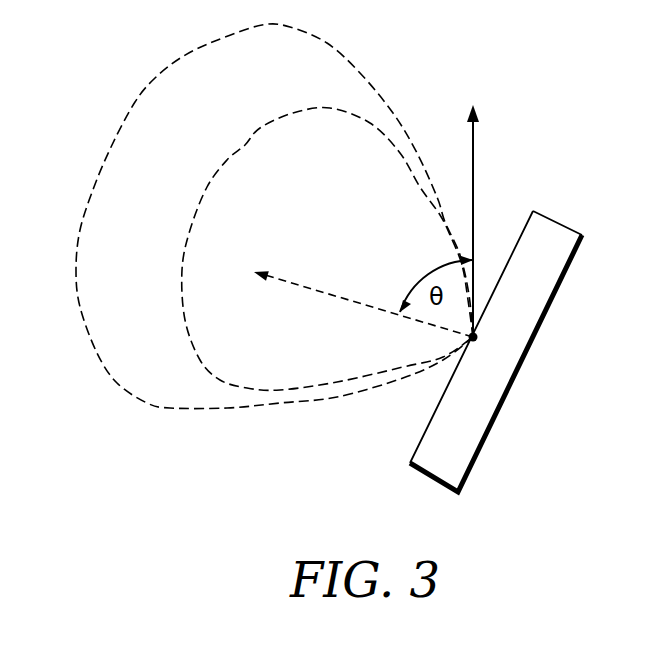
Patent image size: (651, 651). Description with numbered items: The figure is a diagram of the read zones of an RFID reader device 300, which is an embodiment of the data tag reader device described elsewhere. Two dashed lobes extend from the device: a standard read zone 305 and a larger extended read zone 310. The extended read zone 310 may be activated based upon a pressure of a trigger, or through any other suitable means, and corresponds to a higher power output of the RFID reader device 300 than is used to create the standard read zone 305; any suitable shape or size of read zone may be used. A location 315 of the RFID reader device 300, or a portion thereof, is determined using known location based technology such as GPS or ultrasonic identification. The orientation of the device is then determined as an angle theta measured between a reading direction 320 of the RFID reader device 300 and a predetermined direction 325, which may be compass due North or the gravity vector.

The RFID reader device 300 is at (567, 228).
The standard read zone 305 is at (246, 145).
The extended read zone 310 is at (142, 91).
The location 315 is at (468, 337).
The reading direction 320 is at (313, 290).
The predetermined direction 325 is at (474, 167).